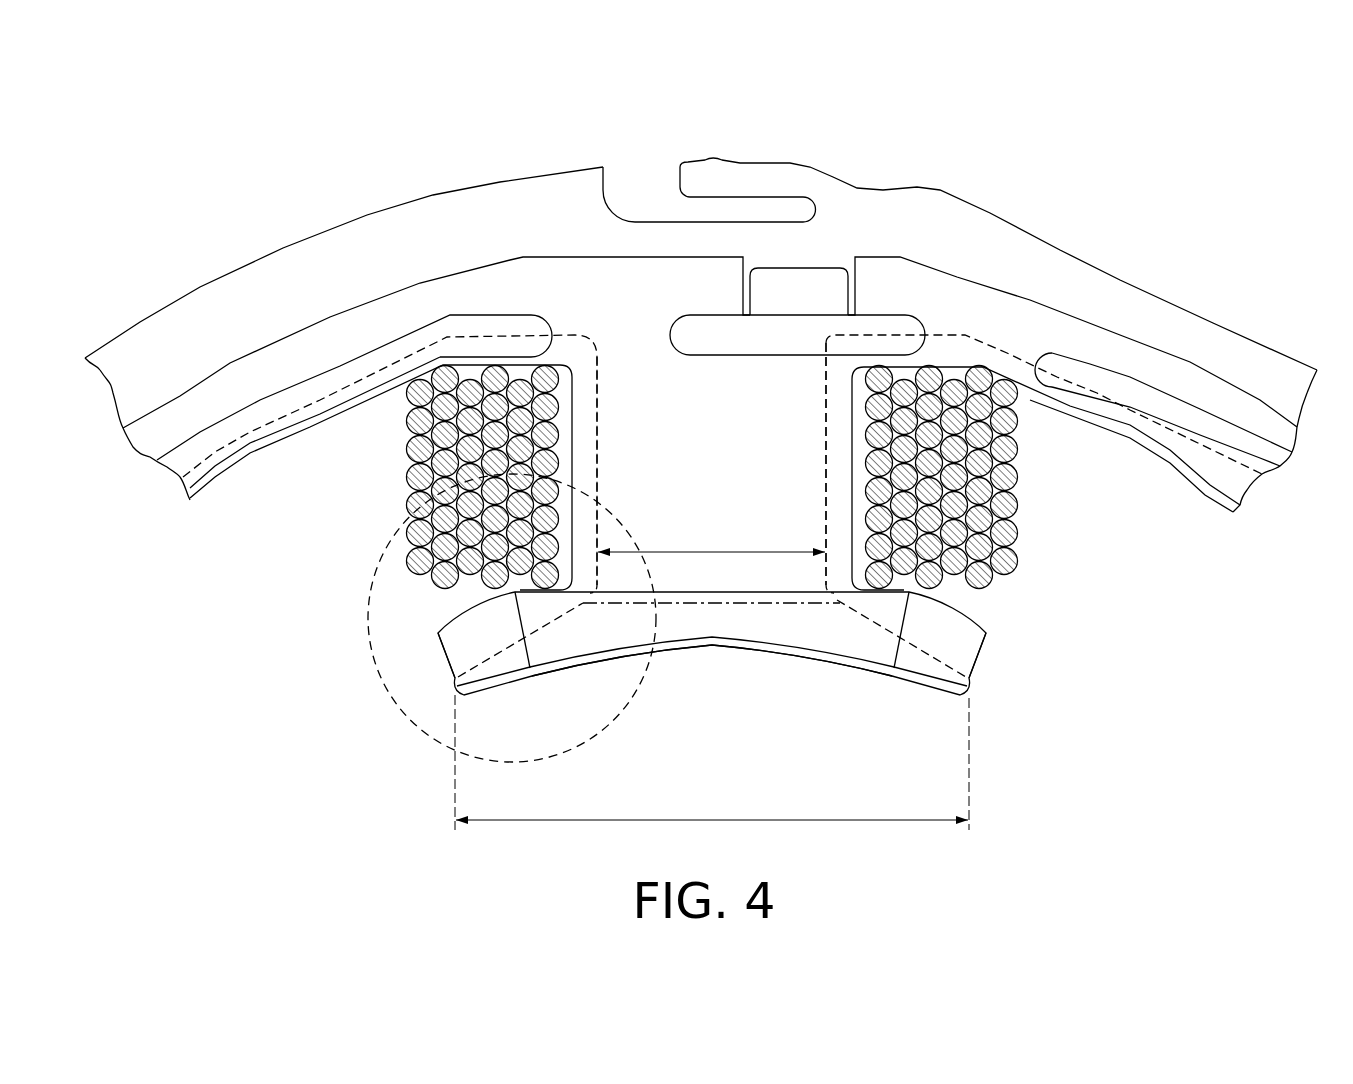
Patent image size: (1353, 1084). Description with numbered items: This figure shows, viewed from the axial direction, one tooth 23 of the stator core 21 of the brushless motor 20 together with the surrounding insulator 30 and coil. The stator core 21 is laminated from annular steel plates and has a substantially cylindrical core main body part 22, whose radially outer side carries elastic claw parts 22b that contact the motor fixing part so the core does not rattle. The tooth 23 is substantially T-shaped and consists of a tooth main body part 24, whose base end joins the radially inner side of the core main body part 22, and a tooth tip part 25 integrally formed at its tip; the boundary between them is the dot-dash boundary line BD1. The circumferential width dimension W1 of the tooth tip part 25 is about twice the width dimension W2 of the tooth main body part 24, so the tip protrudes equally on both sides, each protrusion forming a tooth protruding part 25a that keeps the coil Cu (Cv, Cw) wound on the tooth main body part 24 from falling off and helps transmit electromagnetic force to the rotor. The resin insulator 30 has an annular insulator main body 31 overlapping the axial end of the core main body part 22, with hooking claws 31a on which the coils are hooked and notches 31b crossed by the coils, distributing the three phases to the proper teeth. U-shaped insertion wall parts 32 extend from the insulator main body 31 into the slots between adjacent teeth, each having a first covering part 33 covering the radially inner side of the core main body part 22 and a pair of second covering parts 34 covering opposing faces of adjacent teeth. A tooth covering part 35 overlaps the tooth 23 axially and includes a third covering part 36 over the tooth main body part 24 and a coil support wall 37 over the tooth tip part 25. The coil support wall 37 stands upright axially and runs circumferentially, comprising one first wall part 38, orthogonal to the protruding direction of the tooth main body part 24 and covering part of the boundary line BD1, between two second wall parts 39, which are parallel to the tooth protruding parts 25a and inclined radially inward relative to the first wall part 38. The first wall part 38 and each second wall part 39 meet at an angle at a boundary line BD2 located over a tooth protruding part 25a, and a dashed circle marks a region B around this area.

The brushless motor 20 is at (422, 152).
The stator core 21 is at (1122, 277).
The core main body part 22 is at (320, 288).
The elastic claw parts 22b is at (740, 180).
The tooth 23 is at (828, 380).
The tooth main body part 24 is at (713, 463).
The tooth tip part 25 is at (689, 622).
The tooth protruding part 25a is at (490, 672).
The insulator 30 is at (220, 360).
The insulator main body 31 is at (1193, 388).
The hooking claws 31a is at (802, 290).
The notches 31b is at (670, 333).
The insertion wall parts 32 is at (213, 483).
The first covering part 33 is at (283, 436).
The second covering parts 34 is at (413, 483).
The tooth covering part 35 is at (980, 662).
The third covering part 36 is at (754, 475).
The coil support wall 37 is at (745, 641).
The first wall part 38 is at (582, 646).
The second wall parts 39 is at (454, 653).
The enlarged region B is at (368, 650).
The boundary line BD1 is at (790, 607).
The boundary line BD2 is at (507, 627).
The width dimension W1 is at (712, 762).
The width dimension W2 is at (711, 536).
The coil Cu is at (1005, 543).